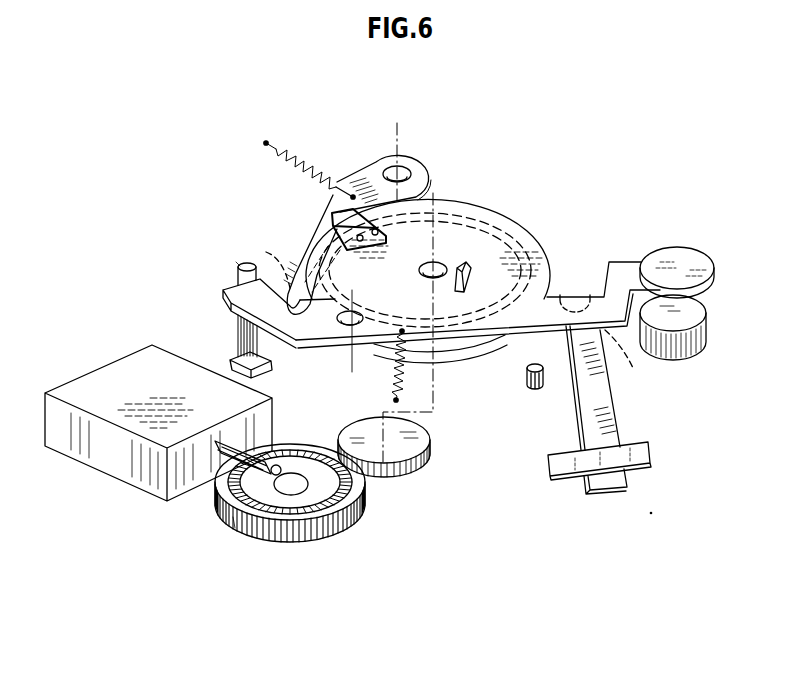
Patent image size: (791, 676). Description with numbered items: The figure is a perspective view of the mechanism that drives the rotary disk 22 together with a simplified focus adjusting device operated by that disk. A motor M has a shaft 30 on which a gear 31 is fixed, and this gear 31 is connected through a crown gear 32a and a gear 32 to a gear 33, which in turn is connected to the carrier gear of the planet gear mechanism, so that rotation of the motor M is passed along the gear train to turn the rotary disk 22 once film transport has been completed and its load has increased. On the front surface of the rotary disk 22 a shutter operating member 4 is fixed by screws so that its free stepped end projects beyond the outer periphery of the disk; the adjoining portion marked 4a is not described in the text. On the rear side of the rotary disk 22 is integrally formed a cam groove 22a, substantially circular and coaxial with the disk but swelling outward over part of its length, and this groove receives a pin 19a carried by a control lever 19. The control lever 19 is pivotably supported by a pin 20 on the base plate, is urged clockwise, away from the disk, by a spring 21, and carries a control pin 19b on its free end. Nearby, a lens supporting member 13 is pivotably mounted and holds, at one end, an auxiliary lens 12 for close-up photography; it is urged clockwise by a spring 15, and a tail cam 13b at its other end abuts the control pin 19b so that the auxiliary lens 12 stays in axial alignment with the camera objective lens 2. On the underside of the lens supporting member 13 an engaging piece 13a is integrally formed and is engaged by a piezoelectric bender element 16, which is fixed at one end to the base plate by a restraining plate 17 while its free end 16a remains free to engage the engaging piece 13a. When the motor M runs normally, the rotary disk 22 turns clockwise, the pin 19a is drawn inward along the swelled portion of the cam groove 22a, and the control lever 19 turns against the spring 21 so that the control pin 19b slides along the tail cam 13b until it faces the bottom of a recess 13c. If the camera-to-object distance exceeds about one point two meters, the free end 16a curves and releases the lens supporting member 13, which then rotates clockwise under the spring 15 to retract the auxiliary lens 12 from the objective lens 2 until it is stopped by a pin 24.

The motor M is at (118, 470).
The camera objective lens 2 is at (676, 311).
The shutter operating member 4 is at (332, 227).
The switch tab 4a is at (334, 212).
The auxiliary lens 12 is at (690, 248).
The lens supporting member 13 is at (500, 330).
The engaging piece 13a is at (573, 286).
The tail cam 13b is at (238, 269).
The recess 13c is at (304, 340).
The spring 15 is at (394, 371).
The piezoelectric bender element 16 is at (604, 403).
The free end of piezoelectric bender element 16a is at (630, 361).
The restraining plate 17 is at (652, 458).
The control lever 19 is at (297, 272).
The pin 19a is at (261, 257).
The control pin 19b is at (236, 262).
The pin 20 is at (397, 128).
The spring 21 is at (283, 157).
The rotary disk 22 is at (538, 232).
The cam groove 22a is at (494, 212).
The pin 24 is at (530, 388).
The shaft 30 is at (222, 455).
The gear 31 is at (233, 517).
The gear 32 is at (297, 540).
The crown gear 32a is at (270, 520).
The gear 33 is at (400, 465).